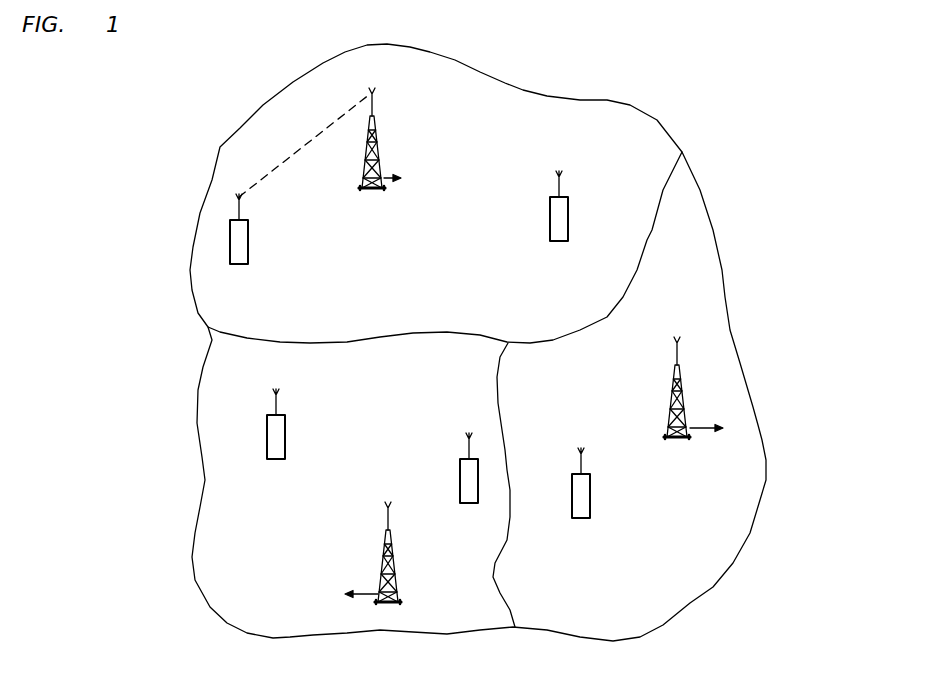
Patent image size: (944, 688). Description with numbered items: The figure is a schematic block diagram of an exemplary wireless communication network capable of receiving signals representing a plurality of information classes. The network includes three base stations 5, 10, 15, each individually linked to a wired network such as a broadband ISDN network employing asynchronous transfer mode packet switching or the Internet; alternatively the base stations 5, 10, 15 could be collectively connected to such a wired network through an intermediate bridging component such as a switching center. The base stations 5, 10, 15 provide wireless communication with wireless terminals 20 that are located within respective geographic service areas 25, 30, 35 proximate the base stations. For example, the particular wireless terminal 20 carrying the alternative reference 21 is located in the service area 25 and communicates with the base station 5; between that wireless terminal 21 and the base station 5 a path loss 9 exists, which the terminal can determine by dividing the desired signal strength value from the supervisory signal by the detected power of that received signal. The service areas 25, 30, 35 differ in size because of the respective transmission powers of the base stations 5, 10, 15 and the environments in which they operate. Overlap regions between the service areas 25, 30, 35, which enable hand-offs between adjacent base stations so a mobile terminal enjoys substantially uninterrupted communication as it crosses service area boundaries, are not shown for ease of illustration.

The base station 5 is at (374, 120).
The path loss 9 is at (293, 154).
The base station 10 is at (680, 376).
The base station 15 is at (392, 558).
The wireless terminal 20 is at (568, 236).
The wireless terminal 21 is at (248, 257).
The service area 25 is at (436, 284).
The service area 30 is at (694, 562).
The service area 35 is at (405, 405).